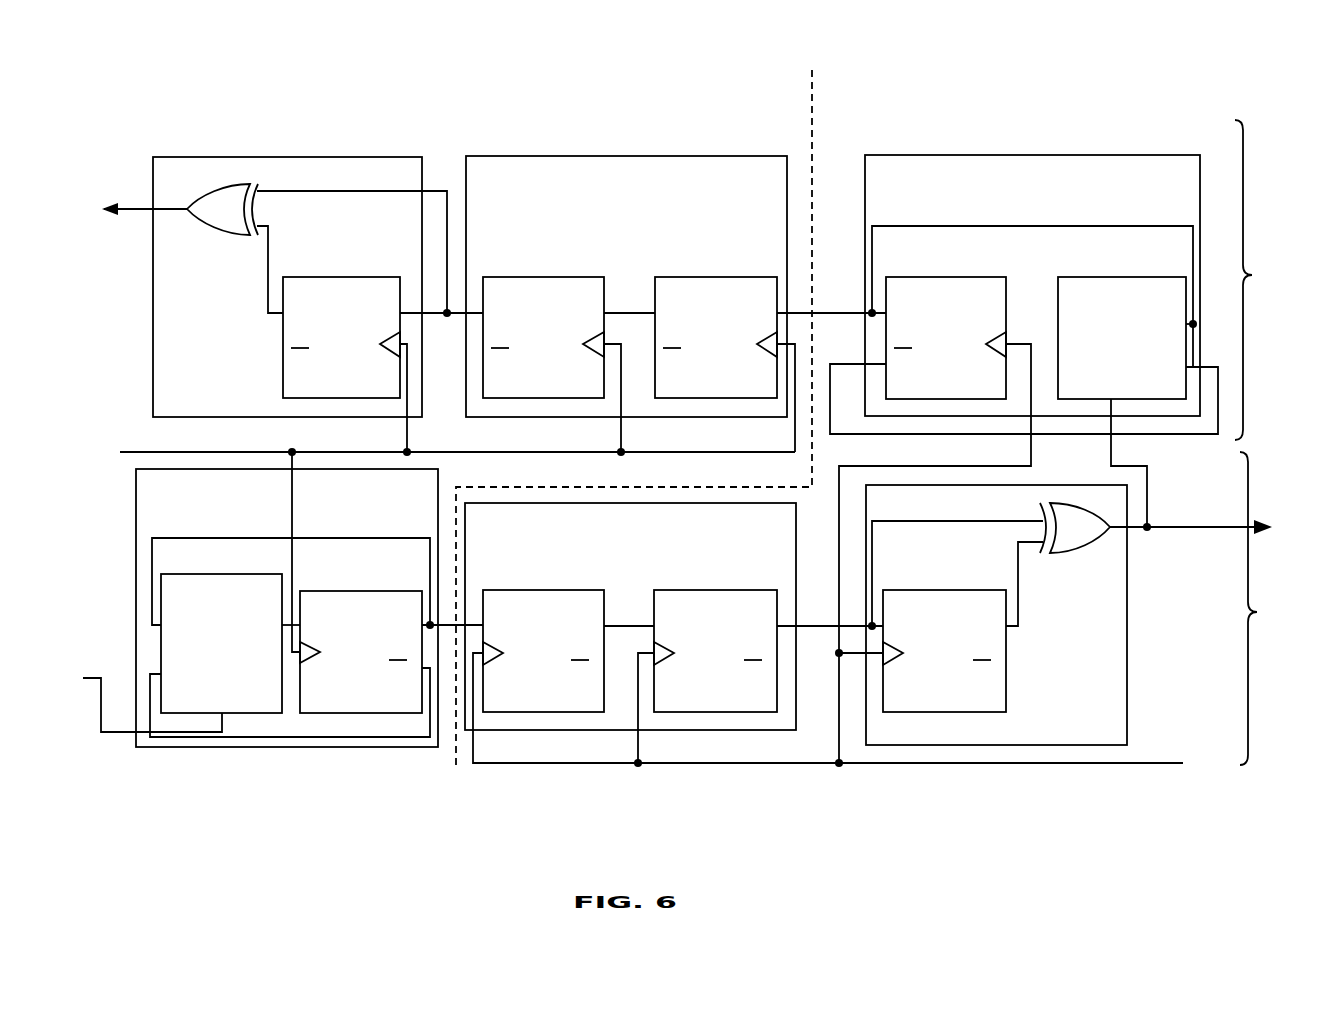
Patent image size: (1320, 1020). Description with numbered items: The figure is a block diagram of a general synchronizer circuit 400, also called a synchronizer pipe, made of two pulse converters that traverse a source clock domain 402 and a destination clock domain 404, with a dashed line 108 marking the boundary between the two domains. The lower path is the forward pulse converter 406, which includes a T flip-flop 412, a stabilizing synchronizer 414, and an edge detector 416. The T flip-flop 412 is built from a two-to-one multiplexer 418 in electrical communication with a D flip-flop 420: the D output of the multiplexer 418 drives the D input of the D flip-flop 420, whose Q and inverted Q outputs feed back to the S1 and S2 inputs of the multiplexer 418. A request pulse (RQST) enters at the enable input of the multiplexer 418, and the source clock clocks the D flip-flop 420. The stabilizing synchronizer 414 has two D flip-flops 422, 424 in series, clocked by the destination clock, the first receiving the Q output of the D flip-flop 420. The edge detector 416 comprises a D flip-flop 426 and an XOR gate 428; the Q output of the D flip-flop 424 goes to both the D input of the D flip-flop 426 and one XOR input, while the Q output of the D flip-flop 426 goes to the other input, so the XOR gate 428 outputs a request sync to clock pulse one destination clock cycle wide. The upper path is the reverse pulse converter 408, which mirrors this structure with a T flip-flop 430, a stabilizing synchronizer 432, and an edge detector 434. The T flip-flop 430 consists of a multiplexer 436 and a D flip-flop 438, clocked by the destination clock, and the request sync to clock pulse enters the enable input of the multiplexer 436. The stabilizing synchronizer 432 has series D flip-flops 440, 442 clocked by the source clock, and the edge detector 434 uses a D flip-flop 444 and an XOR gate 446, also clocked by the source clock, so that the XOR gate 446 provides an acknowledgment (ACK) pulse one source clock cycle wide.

The general synchronizer circuit 400 is at (183, 108).
The source clock domain 402 is at (559, 114).
The destination clock domain 404 is at (1082, 114).
The dashed line 108 is at (810, 160).
The reverse pulse converter 408 is at (1264, 280).
The forward pulse converter 406 is at (1267, 608).
The edge detector 434 is at (226, 392).
The XOR gate 446 is at (218, 236).
The D flip-flop 444 is at (358, 350).
The stabilizing synchronizer 432 is at (642, 244).
The D flip-flop 442 is at (559, 350).
The D flip-flop 440 is at (732, 350).
The T flip-flop 430 is at (1107, 190).
The D flip-flop 438 is at (962, 350).
The multiplexer 436 is at (1138, 350).
The T flip-flop 412 is at (287, 608).
The two-to-one multiplexer 418 is at (238, 660).
The D flip-flop 420 is at (371, 668).
The stabilizing synchronizer 414 is at (630, 616).
The D flip-flop 422 is at (550, 668).
The D flip-flop 424 is at (722, 668).
The edge detector 416 is at (1078, 733).
The D flip-flop 426 is at (951, 668).
The XOR gate 428 is at (1062, 555).